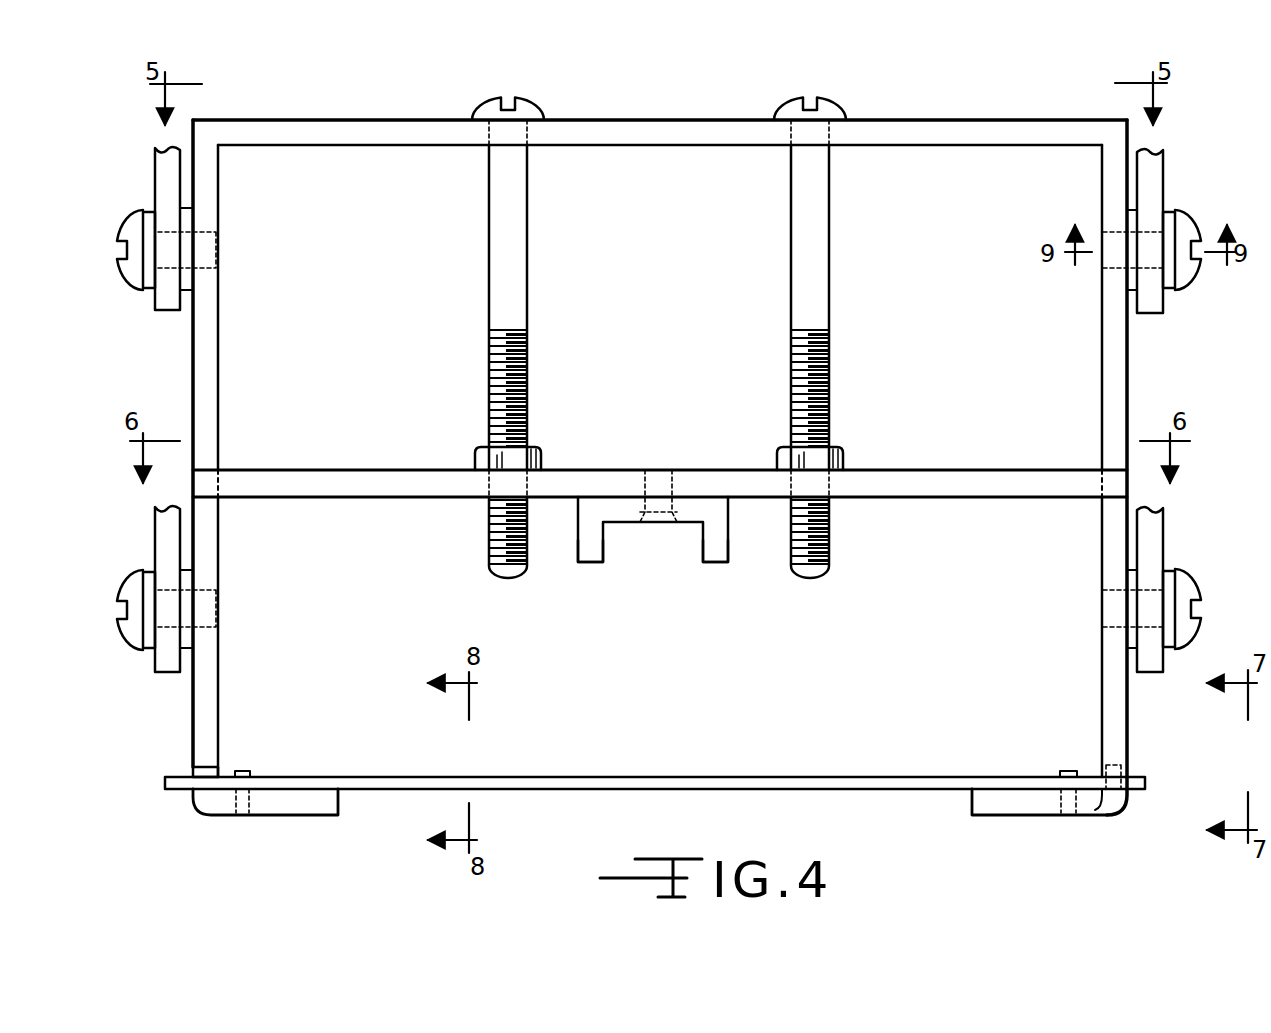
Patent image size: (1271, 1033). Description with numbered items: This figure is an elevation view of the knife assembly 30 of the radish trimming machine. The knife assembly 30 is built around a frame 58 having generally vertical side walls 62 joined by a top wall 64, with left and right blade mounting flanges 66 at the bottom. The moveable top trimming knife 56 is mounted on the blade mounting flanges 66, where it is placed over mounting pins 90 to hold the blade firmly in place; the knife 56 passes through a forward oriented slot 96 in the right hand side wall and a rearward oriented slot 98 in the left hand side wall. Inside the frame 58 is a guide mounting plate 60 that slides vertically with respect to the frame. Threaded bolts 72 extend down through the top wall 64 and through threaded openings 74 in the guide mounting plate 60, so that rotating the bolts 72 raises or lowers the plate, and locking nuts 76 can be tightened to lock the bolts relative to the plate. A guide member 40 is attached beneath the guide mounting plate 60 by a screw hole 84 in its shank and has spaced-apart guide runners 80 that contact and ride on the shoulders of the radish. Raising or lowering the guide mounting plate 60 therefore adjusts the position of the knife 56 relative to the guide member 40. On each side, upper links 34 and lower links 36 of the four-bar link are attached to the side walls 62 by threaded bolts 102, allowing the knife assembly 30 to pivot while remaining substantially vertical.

The knife assembly 30 is at (453, 63).
The frame 58 is at (609, 114).
The top wall 64 is at (650, 119).
The side walls 62 is at (1130, 370).
The threaded openings 74 is at (527, 482).
The top trimming knife 56 is at (648, 790).
The rearward oriented slot 98 is at (190, 767).
The blade mounting flanges 66 is at (285, 817).
The mounting pins 90 is at (240, 770).
The forward oriented slot 96 is at (1120, 778).
The threaded bolts 72 is at (527, 217).
The locking nuts 76 is at (534, 447).
The guide mounting plate 60 is at (758, 506).
The guide member 40 is at (578, 570).
The guide runners 80 is at (597, 564).
The screw hole 84 is at (645, 523).
The upper links 34 is at (1163, 165).
The lower links 36 is at (1163, 522).
The threaded bolts 102 is at (120, 236).